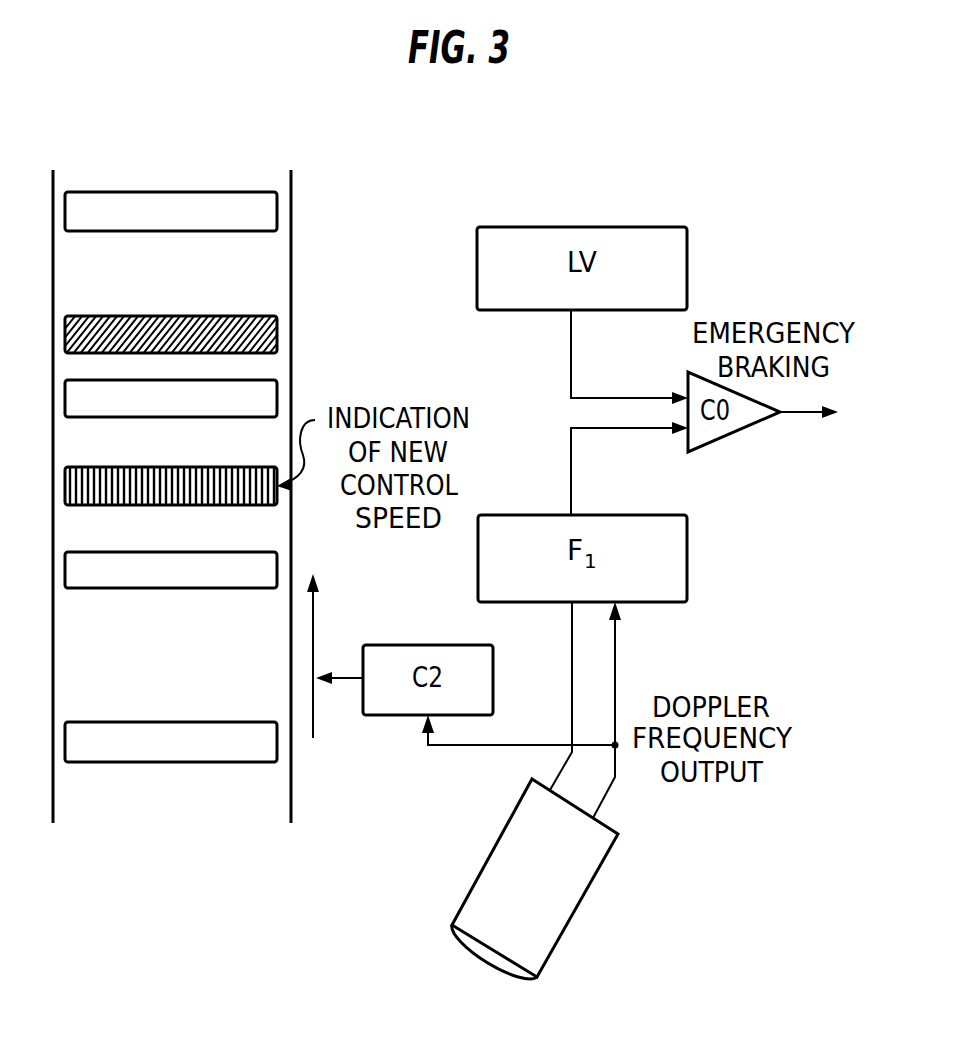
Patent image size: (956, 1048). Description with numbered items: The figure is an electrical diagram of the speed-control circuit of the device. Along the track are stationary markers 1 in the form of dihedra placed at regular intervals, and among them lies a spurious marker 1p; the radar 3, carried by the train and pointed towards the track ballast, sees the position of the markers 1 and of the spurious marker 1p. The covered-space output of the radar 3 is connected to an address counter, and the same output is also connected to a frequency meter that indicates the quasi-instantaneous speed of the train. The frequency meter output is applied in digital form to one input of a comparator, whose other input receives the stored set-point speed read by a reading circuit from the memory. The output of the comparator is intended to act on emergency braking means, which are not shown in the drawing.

The marker 1 is at (175, 216).
The spurious marker 1p is at (284, 338).
The Doppler radar 3 is at (542, 892).